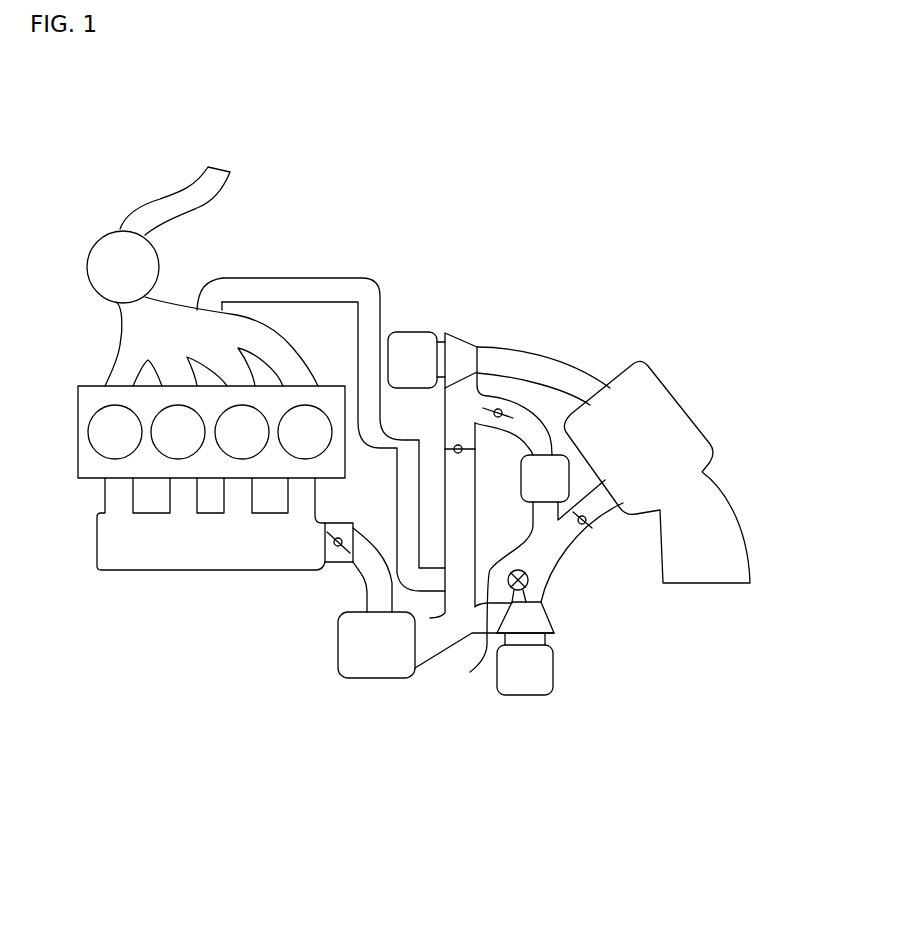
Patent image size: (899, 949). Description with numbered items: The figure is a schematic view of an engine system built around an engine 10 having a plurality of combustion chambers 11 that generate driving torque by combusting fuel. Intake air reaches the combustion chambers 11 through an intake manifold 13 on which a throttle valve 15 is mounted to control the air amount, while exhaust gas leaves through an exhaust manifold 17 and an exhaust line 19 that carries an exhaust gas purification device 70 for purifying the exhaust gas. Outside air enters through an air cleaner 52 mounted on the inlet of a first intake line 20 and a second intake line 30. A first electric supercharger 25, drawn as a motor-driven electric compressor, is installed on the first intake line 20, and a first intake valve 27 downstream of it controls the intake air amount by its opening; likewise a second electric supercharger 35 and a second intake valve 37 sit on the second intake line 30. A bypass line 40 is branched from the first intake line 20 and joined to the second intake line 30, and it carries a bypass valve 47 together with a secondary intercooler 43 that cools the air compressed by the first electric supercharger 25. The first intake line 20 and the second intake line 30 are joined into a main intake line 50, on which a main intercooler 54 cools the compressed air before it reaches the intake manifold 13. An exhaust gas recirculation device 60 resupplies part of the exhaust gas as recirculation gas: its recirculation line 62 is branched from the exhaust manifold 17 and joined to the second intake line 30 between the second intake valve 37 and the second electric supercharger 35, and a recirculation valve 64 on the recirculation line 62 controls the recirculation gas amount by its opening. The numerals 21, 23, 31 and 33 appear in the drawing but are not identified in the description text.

The engine 10 is at (55, 487).
The combustion chambers 11 is at (88, 435).
The intake manifold 13 is at (97, 538).
The throttle valve 15 is at (340, 563).
The exhaust manifold 17 is at (113, 371).
The exhaust line 19 is at (167, 194).
The first intake line 20 is at (530, 348).
The air cleaner 21 is at (410, 331).
The compressor 23 is at (462, 334).
The first electric supercharger 25 is at (493, 288).
The first intake valve 27 is at (459, 455).
The second intake line 30 is at (600, 518).
The catalyst 31 is at (527, 695).
The turbine 33 is at (553, 620).
The second electric supercharger 35 is at (618, 741).
The second intake valve 37 is at (586, 532).
The bypass line 40 is at (493, 561).
The secondary intercooler 43 is at (545, 455).
The bypass valve 47 is at (496, 409).
The main intake line 50 is at (363, 574).
The air cleaner 52 is at (683, 397).
The main intercooler 54 is at (377, 678).
The exhaust gas recirculation (EGR) device 60 is at (505, 774).
The recirculation line 62 is at (428, 585).
The recirculation valve 64 is at (523, 591).
The exhaust gas purification device 70 is at (88, 264).